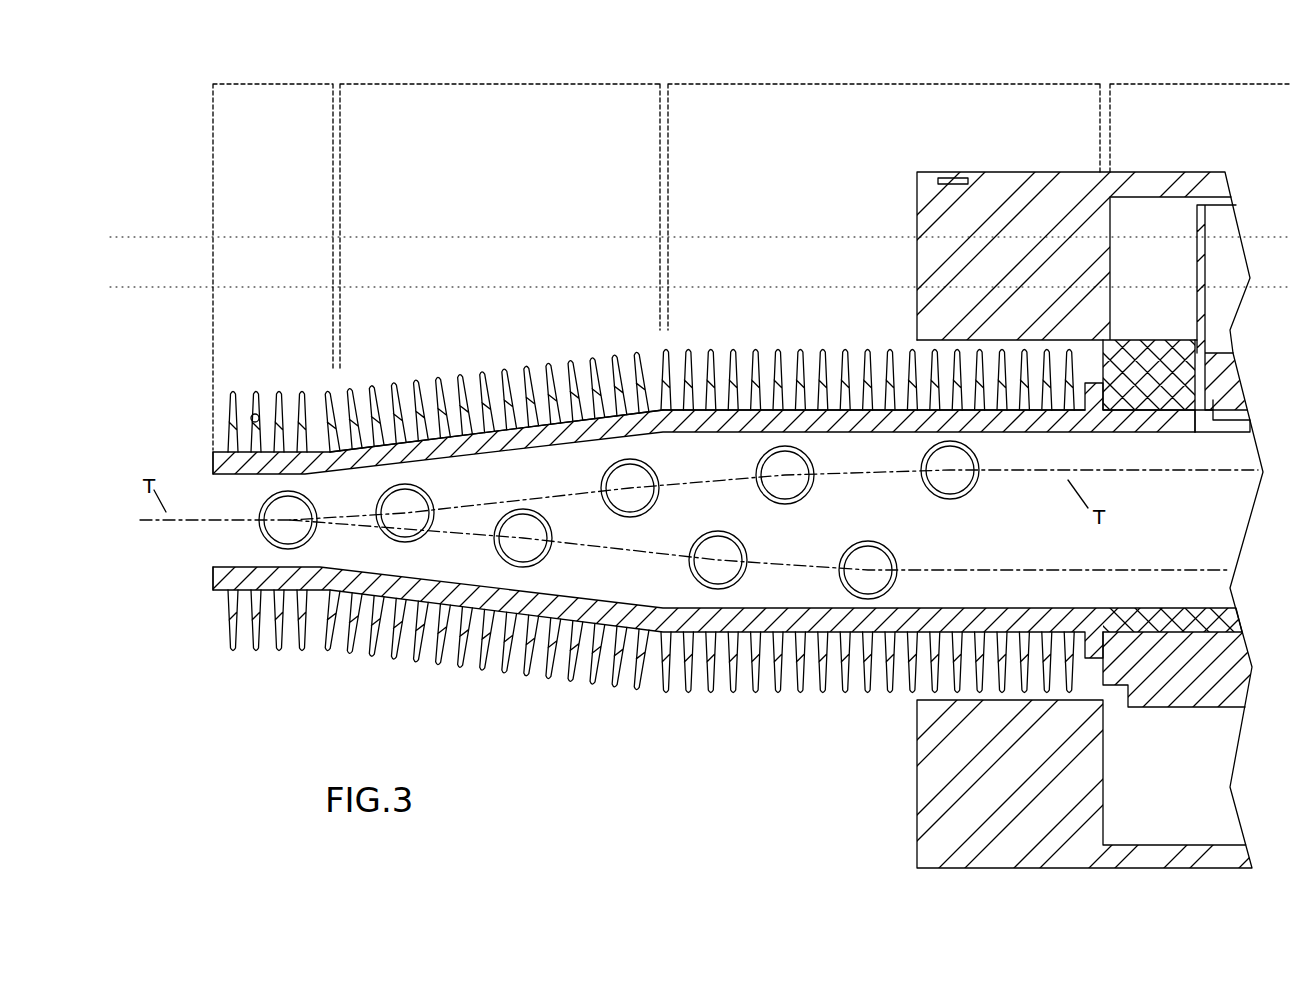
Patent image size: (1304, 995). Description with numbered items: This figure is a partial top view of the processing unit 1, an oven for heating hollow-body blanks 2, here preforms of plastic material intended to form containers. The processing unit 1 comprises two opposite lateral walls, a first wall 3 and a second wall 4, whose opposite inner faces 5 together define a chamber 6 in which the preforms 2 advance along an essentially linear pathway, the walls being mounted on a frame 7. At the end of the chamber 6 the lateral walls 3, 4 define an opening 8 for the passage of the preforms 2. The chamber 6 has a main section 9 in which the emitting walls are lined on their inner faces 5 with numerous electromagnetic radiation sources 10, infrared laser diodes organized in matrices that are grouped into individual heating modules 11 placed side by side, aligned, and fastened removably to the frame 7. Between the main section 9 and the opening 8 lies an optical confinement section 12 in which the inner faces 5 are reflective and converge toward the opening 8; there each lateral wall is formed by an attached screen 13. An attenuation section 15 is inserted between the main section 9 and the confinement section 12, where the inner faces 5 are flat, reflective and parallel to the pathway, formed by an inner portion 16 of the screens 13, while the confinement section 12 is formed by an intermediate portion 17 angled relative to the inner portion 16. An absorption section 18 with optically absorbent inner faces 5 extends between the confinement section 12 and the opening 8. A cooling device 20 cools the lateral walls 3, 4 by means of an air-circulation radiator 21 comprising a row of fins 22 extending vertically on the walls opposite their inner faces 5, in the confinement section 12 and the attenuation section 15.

The processing unit 1 is at (790, 277).
The hollow-body blanks 2 is at (262, 508).
The first wall 3 is at (1165, 418).
The second wall 4 is at (1168, 618).
The inner faces 5 is at (300, 470).
The chamber 6 is at (1018, 438).
The frame 7 is at (925, 847).
The opening 8 is at (213, 543).
The main section 9 is at (1185, 82).
The electromagnetic radiation sources 10 is at (1250, 415).
The heating modules 11 is at (1225, 392).
The optical confinement section 12 is at (503, 82).
The attached screen 13 is at (215, 462).
The attenuation section 15 is at (895, 82).
The inner portion 16 is at (856, 420).
The intermediate portion 17 is at (566, 428).
The absorption section 18 is at (273, 80).
The cooling device 20 is at (651, 677).
The radiator 21 is at (688, 693).
The fins 22 is at (651, 541).